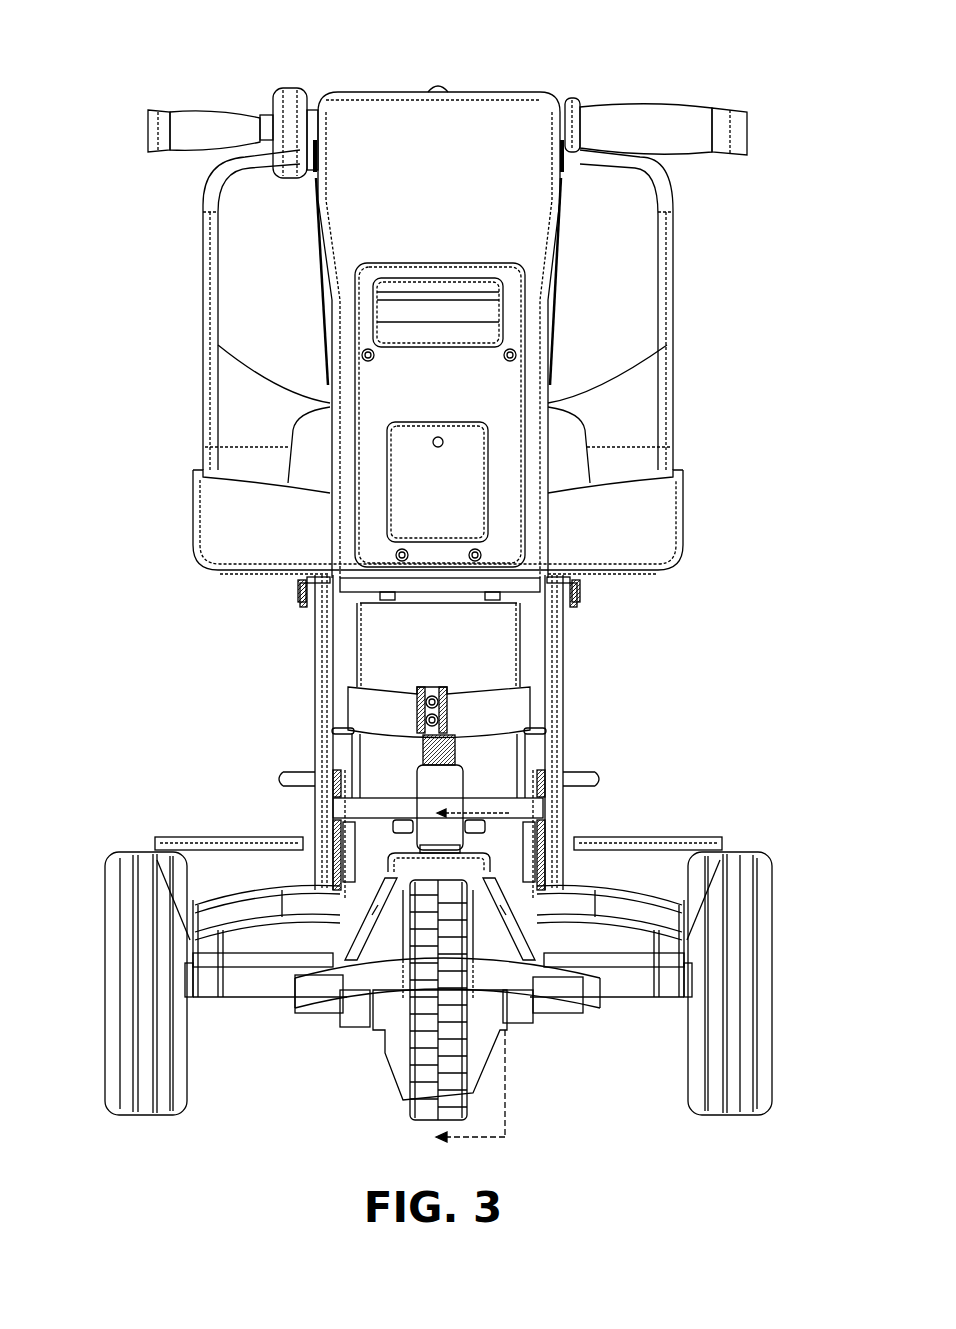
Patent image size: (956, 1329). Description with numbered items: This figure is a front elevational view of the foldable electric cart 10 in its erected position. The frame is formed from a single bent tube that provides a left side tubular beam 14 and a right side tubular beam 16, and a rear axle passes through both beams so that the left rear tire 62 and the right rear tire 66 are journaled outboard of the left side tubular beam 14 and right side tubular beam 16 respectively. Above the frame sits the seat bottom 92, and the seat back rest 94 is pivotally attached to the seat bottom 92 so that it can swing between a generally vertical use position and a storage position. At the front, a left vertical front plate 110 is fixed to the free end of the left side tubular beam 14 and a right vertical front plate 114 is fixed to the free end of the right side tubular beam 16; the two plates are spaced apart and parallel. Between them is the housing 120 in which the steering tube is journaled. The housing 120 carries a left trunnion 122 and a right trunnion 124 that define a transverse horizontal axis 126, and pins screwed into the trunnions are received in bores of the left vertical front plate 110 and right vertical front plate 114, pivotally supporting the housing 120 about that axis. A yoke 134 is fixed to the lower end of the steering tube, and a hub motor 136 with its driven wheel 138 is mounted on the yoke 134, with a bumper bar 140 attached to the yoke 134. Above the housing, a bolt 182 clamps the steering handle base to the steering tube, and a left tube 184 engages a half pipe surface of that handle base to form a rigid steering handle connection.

The foldable electric cart 10 is at (176, 84).
The left side tubular beam 14 is at (668, 1000).
The right side tubular beam 16 is at (213, 993).
The tire 62 is at (773, 947).
The tire 66 is at (104, 978).
The seat bottom 92 is at (247, 480).
The seat back rest 94 is at (230, 240).
The left vertical front plate 110 is at (560, 937).
The right vertical front plate 114 is at (323, 940).
The housing 120 is at (433, 788).
The left trunnion 122 is at (495, 825).
The right trunnion 124 is at (380, 825).
The transverse horizontal axis 126 is at (358, 732).
The yoke 134 is at (545, 935).
The hub motor 136 is at (393, 1068).
The driven wheel 138 is at (458, 1118).
The bumper bar 140 is at (403, 977).
The bolt 182 is at (220, 360).
The left tube 184 is at (656, 365).